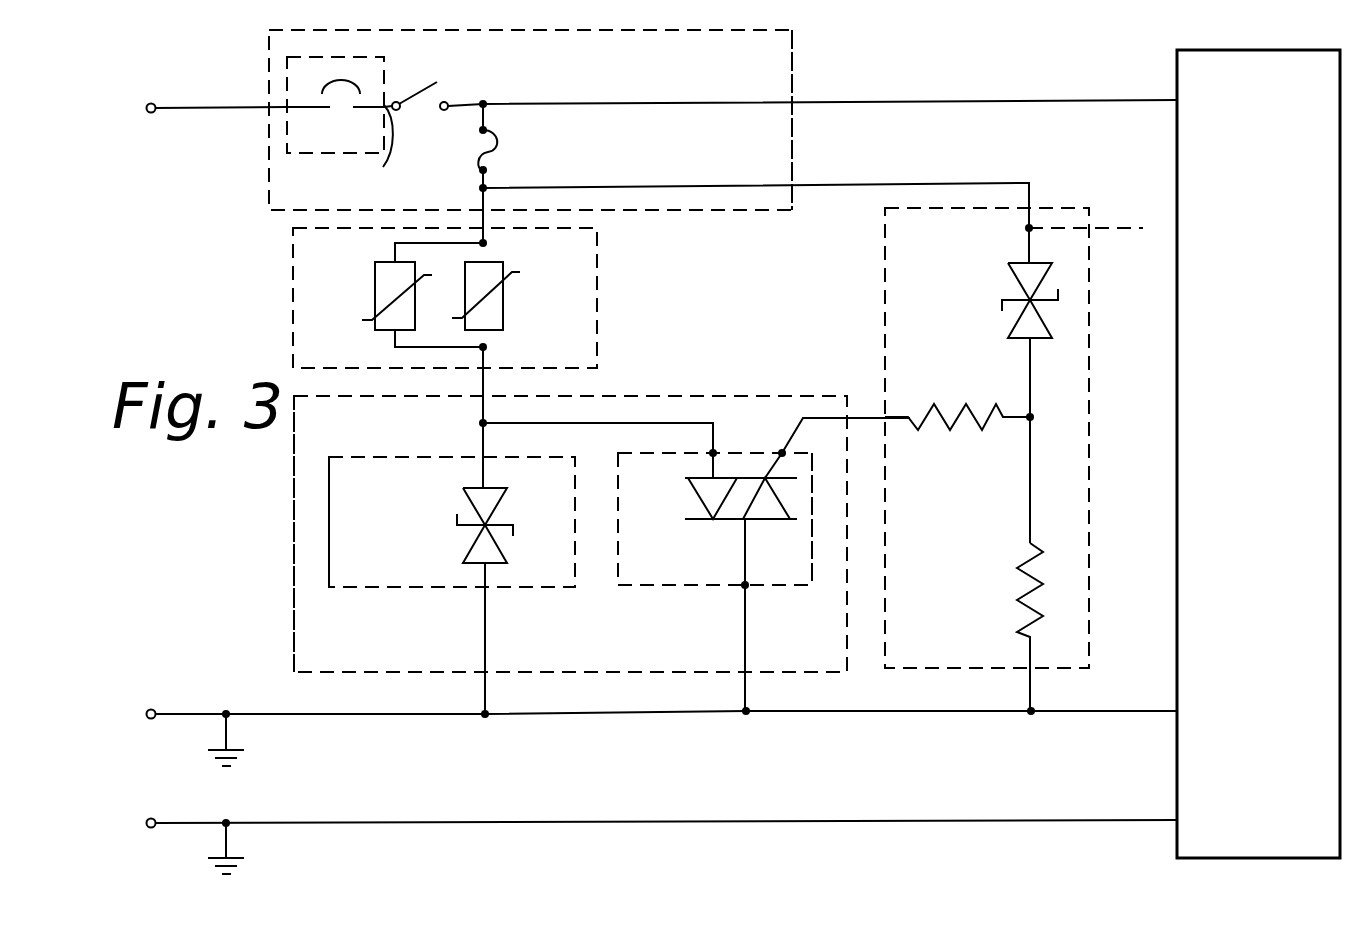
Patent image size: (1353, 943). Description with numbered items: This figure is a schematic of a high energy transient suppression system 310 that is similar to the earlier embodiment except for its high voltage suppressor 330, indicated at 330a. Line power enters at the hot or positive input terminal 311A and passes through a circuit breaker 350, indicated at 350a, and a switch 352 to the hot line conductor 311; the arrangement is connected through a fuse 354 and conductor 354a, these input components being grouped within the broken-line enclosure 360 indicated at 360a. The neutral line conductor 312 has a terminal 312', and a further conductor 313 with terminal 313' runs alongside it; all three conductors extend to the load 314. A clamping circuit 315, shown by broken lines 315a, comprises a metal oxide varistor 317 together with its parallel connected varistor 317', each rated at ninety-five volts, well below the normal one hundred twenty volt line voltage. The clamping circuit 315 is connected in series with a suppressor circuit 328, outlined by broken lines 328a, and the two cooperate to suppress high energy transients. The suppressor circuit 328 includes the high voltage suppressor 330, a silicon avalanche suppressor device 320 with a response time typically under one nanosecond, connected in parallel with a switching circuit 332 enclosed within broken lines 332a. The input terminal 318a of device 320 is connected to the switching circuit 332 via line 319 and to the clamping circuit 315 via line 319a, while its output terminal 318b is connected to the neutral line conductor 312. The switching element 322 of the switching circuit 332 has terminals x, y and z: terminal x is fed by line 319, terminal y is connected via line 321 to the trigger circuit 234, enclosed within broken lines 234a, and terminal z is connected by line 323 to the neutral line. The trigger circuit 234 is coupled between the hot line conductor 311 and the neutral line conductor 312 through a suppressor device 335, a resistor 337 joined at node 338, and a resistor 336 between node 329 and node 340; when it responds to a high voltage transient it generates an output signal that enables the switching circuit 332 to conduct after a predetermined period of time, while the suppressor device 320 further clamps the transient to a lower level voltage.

The high energy suppression system 310 is at (212, 330).
The hot line conductor 311 is at (643, 103).
The hot input terminal 311A is at (151, 113).
The neutral line conductor 312 is at (662, 741).
The neutral input terminal ground 312' is at (199, 710).
The ground line conductor 313 is at (662, 848).
The ground input terminal 313' is at (210, 828).
The load 314 is at (1178, 52).
The clamping circuit 315 is at (597, 342).
The broken lines 315a is at (597, 230).
The metal oxide varistor 317 is at (523, 340).
The parallel connected varistor 317' is at (395, 300).
The input terminal 318a is at (500, 423).
The output terminal 318b is at (485, 716).
The line 319 is at (640, 423).
The line 319a is at (487, 380).
The silicon avalanche suppressor device 320 is at (470, 560).
The line 321 is at (850, 365).
The triac 322 is at (690, 492).
The line 323 is at (748, 690).
The suppressor circuit 328 is at (305, 455).
The broken lines 328a is at (290, 422).
The node 329 is at (1028, 498).
The high voltage suppressor 330 is at (545, 558).
The indication of high voltage suppressor 330a is at (325, 505).
The switching circuit 332 is at (635, 583).
The broken lines 332a is at (830, 602).
The bidirectional transient voltage suppressor 335 is at (1008, 337).
The resistor 10K 336 is at (1025, 556).
The resistor 470 ohm 337 is at (945, 402).
The node 338 is at (1014, 385).
The node 340 is at (1028, 686).
The circuit breaker 350 is at (358, 93).
The circuit breaker boundary 350a is at (354, 156).
The switch 352 is at (425, 82).
The fuse 354 is at (475, 143).
The conductor from fuse 354a is at (647, 187).
The protection input circuit 360 is at (768, 128).
The protection input circuit boundary 360a is at (792, 72).
The trigger circuit 234 is at (905, 235).
The broken lines 234a is at (1029, 183).